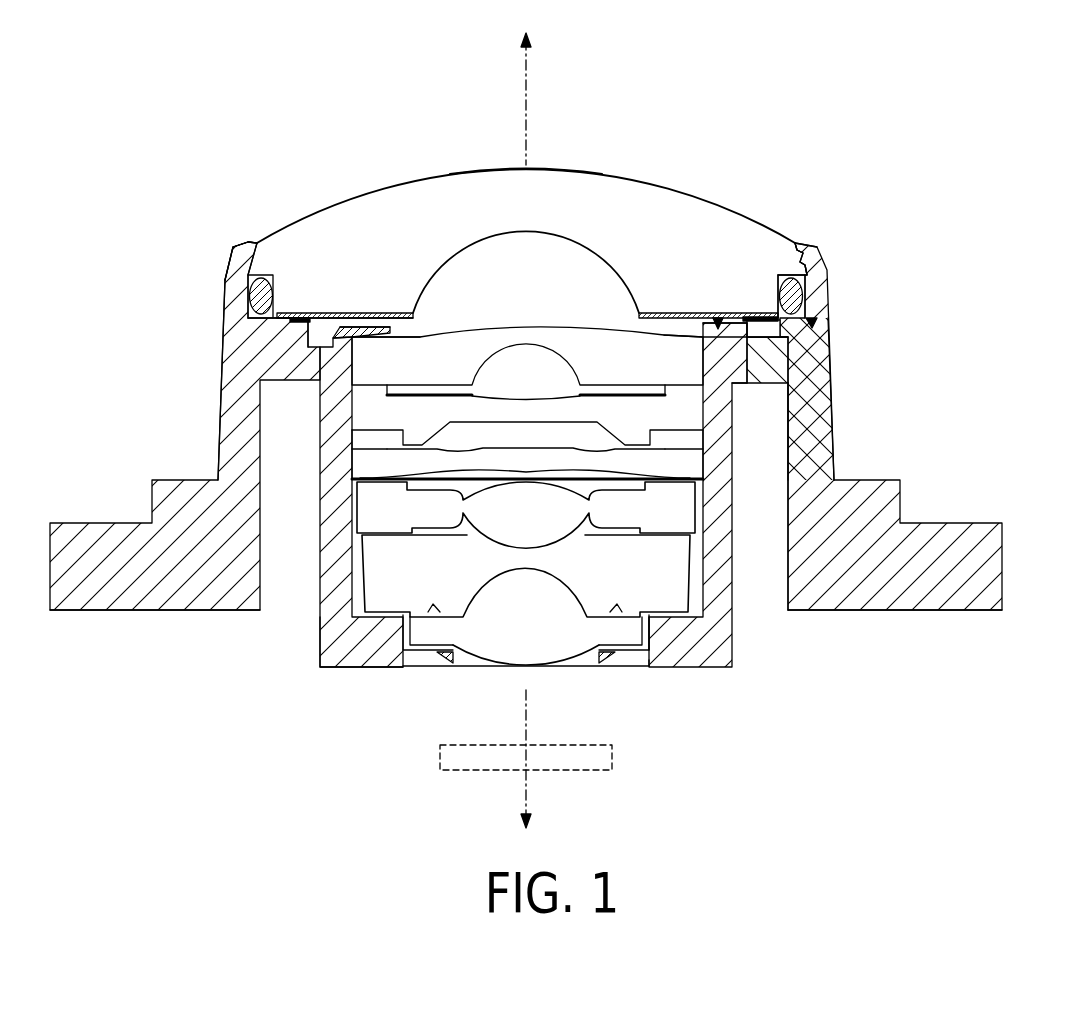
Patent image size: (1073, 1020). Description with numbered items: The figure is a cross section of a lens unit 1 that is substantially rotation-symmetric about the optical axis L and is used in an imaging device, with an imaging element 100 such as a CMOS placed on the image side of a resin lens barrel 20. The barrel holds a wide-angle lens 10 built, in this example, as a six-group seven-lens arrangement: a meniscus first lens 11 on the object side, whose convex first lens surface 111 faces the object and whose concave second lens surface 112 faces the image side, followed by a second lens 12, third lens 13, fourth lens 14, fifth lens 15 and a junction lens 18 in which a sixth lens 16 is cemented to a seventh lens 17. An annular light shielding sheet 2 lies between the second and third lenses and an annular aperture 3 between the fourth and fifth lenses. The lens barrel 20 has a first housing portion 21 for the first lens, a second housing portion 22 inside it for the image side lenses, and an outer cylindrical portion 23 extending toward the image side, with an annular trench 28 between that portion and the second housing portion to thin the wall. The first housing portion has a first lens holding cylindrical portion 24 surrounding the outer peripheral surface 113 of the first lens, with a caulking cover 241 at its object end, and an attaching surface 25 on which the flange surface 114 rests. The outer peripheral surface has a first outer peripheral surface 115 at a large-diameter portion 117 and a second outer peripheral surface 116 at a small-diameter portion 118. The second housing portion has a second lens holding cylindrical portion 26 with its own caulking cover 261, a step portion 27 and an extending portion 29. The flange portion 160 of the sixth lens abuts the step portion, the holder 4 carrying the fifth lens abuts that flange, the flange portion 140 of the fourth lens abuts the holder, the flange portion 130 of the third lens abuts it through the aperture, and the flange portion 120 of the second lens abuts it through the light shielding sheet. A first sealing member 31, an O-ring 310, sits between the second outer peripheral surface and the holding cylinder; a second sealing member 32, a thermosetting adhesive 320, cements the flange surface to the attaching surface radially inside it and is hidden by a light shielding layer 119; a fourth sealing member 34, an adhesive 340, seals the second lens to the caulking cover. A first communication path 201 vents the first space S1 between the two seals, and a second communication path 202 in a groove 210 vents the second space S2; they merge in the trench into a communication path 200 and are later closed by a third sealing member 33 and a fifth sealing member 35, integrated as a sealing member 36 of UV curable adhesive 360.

The lens unit 1 is at (915, 120).
The light shielding sheet 2 is at (536, 390).
The aperture 3 is at (607, 480).
The holder 4 is at (372, 512).
The wide-angle lens 10 is at (526, 195).
The first lens 11 is at (526, 205).
The second lens 12 is at (408, 352).
The third lens 13 is at (408, 407).
The fourth lens 14 is at (408, 454).
The fifth lens 15 is at (487, 513).
The sixth lens 16 is at (430, 562).
The seventh lens 17 is at (487, 640).
The junction lens 18 is at (497, 668).
The lens barrel 20 is at (908, 505).
The first housing portion 21 is at (158, 255).
The second housing portion 22 is at (765, 735).
The outer cylindrical portion 23 is at (222, 418).
The first lens holding cylindrical portion 24 is at (230, 283).
The attaching surface 25 is at (287, 324).
The second lens holding cylindrical portion 26 is at (717, 587).
The step portion 27 is at (668, 620).
The trench 28 is at (762, 590).
The extending portion 29 is at (630, 668).
The first sealing member 31 is at (595, 304).
The O-ring 310 is at (806, 297).
The second sealing member 32 is at (508, 246).
The adhesive 320 is at (290, 310).
The third sealing member 33 is at (904, 399).
The fourth sealing member 34 is at (700, 239).
The adhesive 340 is at (690, 327).
The fifth sealing member 35 is at (904, 399).
The sealing member 36 is at (904, 399).
The adhesive 360 is at (808, 403).
The imaging element 100 is at (600, 770).
The first lens surface 111 is at (593, 167).
The second lens surface 112 is at (448, 262).
The outer peripheral surface 113 is at (888, 236).
The flange surface 114 is at (383, 323).
The first outer peripheral surface 115 is at (803, 256).
The second outer peripheral surface 116 is at (808, 276).
The large-diameter portion 117 is at (792, 252).
The small-diameter portion 118 is at (763, 295).
The light shielding layer 119 is at (653, 308).
The flange portion 120 is at (365, 357).
The flange portion 130 is at (400, 410).
The flange portion 140 is at (370, 465).
The flange portion 160 is at (325, 615).
The communication path 200 is at (798, 368).
The first communication path 201 is at (803, 347).
The second communication path 202 is at (771, 272).
The groove 210 is at (735, 345).
The caulking cover 241 is at (247, 247).
The caulking cover 261 is at (352, 330).
The optical axis L is at (527, 105).
The first space S1 is at (815, 327).
The second space S2 is at (733, 318).